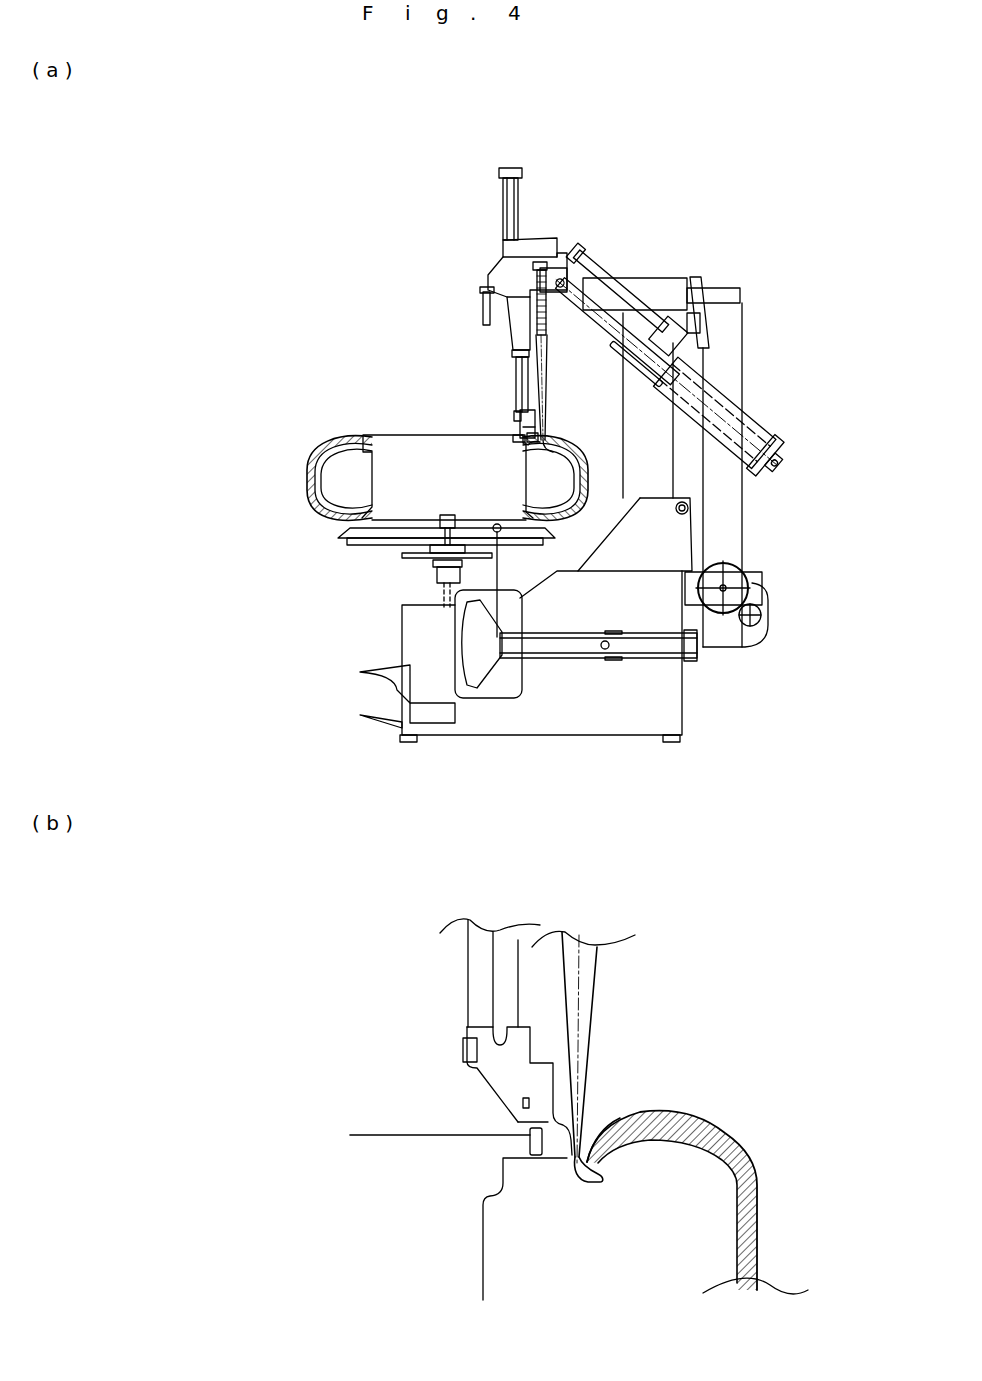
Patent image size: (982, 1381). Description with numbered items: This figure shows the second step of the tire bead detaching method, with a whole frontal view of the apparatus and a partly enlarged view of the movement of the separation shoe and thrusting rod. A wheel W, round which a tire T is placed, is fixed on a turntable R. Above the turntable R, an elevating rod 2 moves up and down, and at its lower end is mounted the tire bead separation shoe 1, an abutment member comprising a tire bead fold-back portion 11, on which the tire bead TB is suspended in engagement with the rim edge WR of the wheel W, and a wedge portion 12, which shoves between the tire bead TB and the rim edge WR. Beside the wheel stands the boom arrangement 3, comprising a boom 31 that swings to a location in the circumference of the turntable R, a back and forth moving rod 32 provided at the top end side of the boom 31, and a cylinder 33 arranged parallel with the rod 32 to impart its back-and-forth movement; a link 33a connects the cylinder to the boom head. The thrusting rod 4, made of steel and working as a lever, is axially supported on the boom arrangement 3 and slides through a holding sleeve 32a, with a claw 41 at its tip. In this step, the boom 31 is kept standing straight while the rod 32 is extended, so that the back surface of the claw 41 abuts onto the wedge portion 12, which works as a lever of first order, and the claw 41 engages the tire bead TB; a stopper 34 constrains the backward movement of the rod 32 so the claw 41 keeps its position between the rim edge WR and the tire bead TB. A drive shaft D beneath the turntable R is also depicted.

The tire bead separation shoe 1 is at (513, 412).
The elevating rod 2 is at (515, 382).
The boom arrangement 3 is at (753, 550).
The thrusting rod 4 is at (548, 390).
The tire bead fold-back portion 11 is at (543, 430).
The wedge portion 12 is at (543, 437).
The boom 31 is at (708, 458).
The back and forth moving rod 32 is at (708, 420).
The holding sleeve 32a is at (547, 262).
The cylinder 33 is at (757, 397).
The link 33a is at (597, 263).
The stopper 34 is at (612, 345).
The claw 41 is at (523, 452).
The tire T is at (332, 453).
The wheel W is at (417, 452).
The rim edge WR is at (527, 440).
The tire bead TB is at (547, 447).
The turntable R is at (350, 538).
The drive shaft D is at (440, 572).